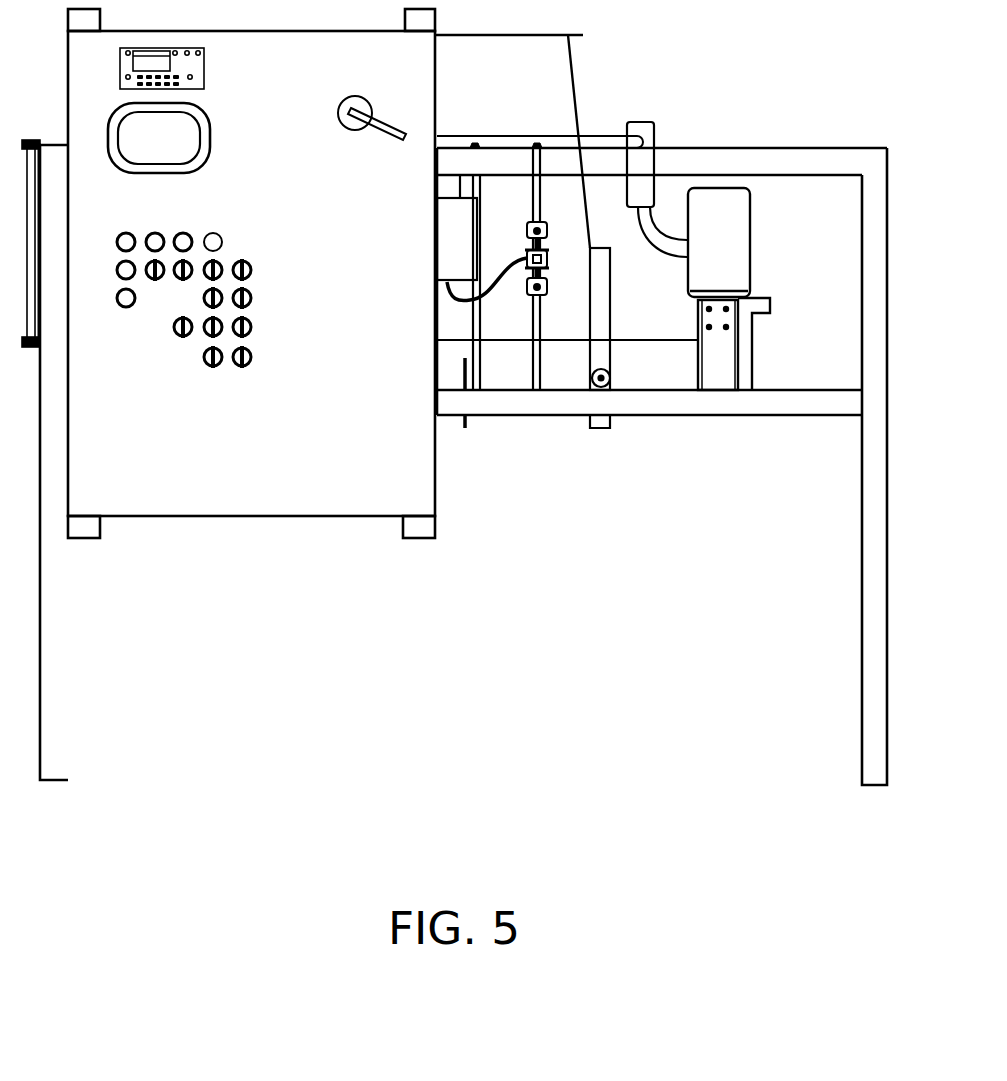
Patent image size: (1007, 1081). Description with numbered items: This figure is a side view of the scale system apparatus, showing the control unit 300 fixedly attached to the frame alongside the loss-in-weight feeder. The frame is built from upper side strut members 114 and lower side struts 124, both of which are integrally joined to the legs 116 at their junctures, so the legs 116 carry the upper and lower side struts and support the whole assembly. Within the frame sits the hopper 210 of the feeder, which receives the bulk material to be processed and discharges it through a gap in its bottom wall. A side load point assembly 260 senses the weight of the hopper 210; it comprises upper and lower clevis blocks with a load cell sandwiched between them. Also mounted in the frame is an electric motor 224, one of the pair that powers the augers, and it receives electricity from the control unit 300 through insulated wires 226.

The control unit 300 is at (377, 459).
The legs 116 is at (57, 730).
The upper side strut members 114 is at (796, 158).
The lower side struts 124 is at (786, 405).
The hopper 210 is at (557, 57).
The side load point assembly 260 is at (515, 217).
The insulated wires 226 is at (655, 238).
The electric motors 224 is at (737, 243).